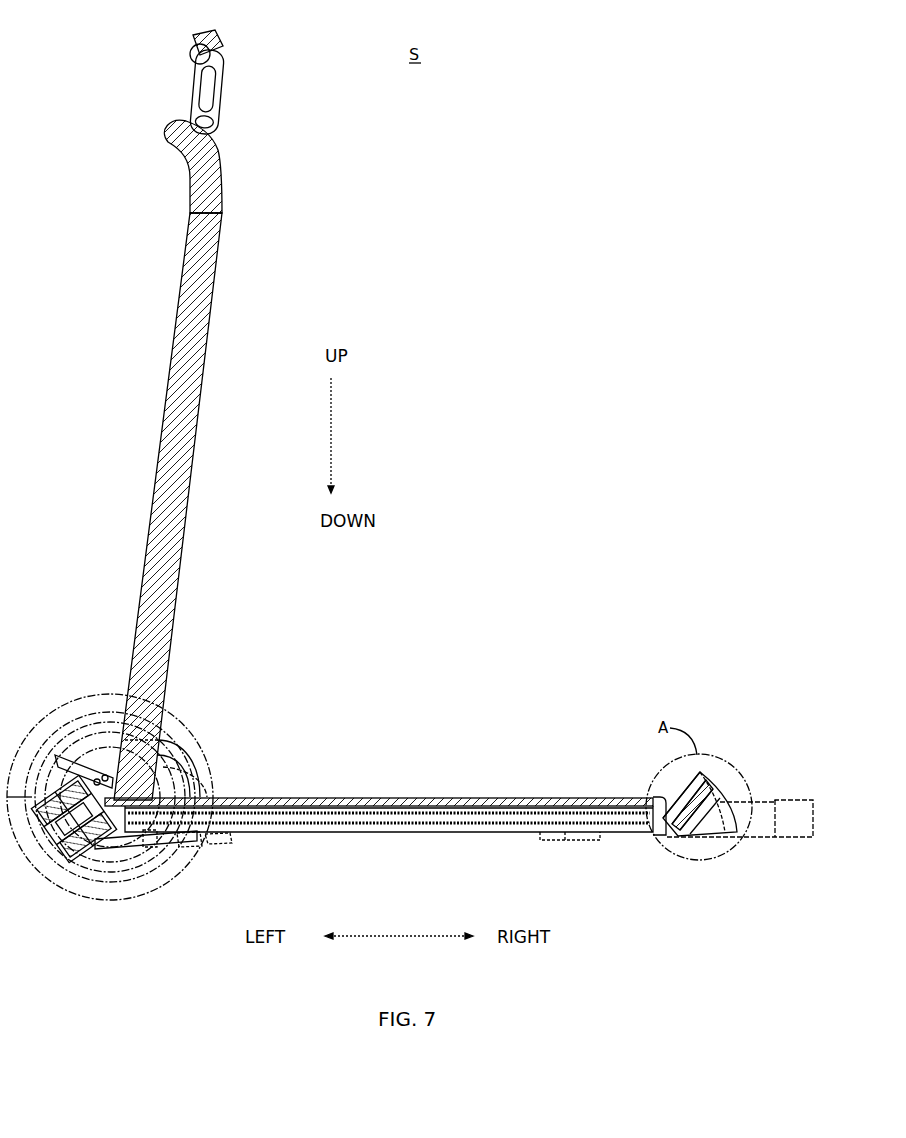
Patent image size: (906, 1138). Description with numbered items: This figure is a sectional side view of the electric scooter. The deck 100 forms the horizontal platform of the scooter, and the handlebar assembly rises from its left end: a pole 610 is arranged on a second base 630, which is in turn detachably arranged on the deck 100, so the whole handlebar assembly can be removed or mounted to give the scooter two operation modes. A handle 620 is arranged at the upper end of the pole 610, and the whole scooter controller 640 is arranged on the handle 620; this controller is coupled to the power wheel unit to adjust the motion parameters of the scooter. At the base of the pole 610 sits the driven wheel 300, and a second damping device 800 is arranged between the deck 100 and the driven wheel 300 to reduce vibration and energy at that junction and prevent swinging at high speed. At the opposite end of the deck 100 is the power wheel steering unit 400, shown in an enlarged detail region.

The deck 100 is at (520, 797).
The driven wheel 300 is at (68, 708).
The power wheel steering unit 400 is at (708, 770).
The pole 610 is at (157, 607).
The handle 620 is at (222, 108).
The second base 630 is at (180, 797).
The whole scooter controller 640 is at (192, 62).
The second damping device 800 is at (200, 837).